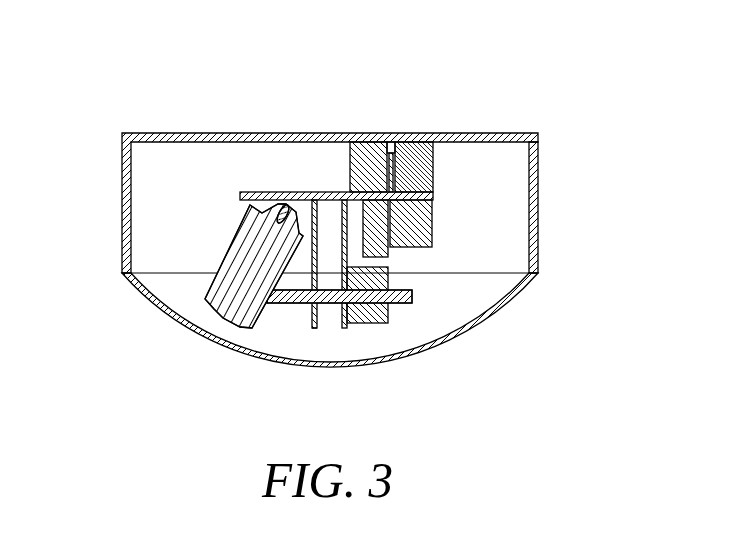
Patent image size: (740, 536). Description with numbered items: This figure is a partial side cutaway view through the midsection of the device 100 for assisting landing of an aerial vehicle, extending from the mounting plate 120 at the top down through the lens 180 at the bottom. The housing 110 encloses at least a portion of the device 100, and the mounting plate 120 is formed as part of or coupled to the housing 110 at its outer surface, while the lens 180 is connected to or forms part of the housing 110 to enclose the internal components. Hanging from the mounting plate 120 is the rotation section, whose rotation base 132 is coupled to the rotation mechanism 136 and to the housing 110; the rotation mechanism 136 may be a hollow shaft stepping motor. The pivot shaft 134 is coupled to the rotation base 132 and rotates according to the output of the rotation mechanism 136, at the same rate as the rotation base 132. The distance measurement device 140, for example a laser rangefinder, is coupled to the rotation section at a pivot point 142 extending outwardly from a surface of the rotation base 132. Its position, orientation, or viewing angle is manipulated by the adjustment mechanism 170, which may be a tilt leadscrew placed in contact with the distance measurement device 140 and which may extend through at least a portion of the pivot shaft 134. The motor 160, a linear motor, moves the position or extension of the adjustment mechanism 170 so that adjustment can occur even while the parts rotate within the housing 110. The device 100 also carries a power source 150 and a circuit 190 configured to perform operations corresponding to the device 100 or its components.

The device 100 is at (590, 358).
The housing 110 is at (170, 133).
The mounting plate 120 is at (315, 133).
The rotation base 132 is at (390, 146).
The pivot shaft 134 is at (313, 328).
The rotation mechanism 136 is at (368, 133).
The distance measurement device 140 is at (222, 318).
The pivot point 142 is at (262, 226).
The power source 150 is at (375, 222).
The motor 160 is at (368, 323).
The adjustment mechanism 170 is at (407, 303).
The lens 180 is at (313, 328).
The circuit 190 is at (425, 218).